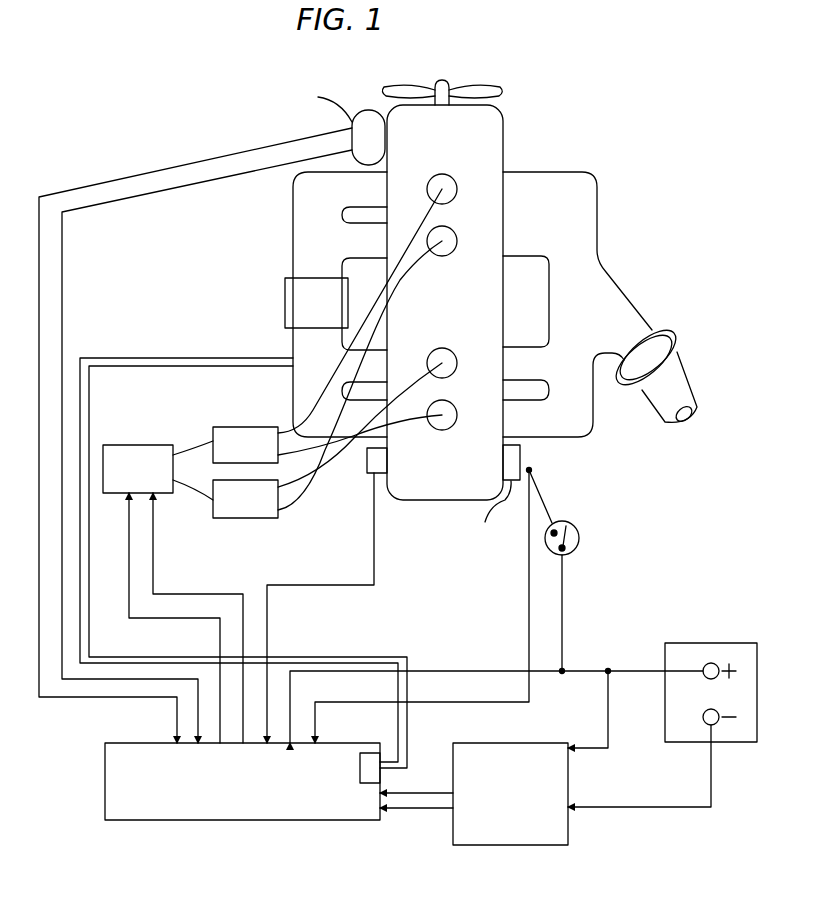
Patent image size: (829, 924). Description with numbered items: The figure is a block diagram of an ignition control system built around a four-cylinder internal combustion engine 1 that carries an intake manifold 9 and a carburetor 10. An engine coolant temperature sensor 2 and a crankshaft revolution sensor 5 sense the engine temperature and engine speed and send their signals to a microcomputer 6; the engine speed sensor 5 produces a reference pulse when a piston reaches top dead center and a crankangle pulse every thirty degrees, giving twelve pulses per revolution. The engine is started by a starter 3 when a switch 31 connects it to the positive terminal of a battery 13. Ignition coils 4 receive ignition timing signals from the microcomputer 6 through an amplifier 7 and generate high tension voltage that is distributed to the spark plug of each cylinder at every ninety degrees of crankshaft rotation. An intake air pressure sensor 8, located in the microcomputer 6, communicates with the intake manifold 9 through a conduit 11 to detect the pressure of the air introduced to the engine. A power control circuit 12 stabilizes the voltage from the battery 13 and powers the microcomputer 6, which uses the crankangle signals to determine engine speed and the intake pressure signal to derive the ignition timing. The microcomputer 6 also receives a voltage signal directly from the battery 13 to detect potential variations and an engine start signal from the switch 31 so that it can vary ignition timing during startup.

The internal combustion engine 1 is at (503, 128).
The engine coolant temperature sensor 2 is at (366, 465).
The starter 3 is at (520, 456).
The ignition coils 4 is at (243, 427).
The crankshaft revolution sensor 5 is at (369, 115).
The microcomputer 6 is at (105, 774).
The amplifier 7 is at (140, 445).
The intake air pressure sensor 8 is at (382, 775).
The intake manifold 9 is at (293, 216).
The carburetor 10 is at (285, 296).
The conduit 11 is at (137, 358).
The power control circuit 12 is at (568, 782).
The battery 13 is at (710, 643).
The switch 31 is at (580, 540).